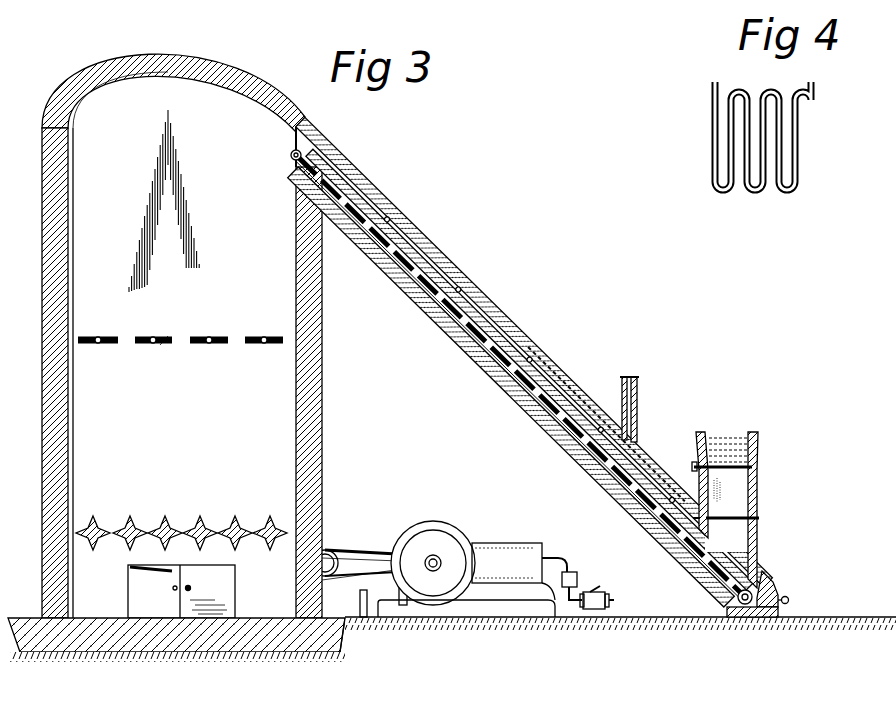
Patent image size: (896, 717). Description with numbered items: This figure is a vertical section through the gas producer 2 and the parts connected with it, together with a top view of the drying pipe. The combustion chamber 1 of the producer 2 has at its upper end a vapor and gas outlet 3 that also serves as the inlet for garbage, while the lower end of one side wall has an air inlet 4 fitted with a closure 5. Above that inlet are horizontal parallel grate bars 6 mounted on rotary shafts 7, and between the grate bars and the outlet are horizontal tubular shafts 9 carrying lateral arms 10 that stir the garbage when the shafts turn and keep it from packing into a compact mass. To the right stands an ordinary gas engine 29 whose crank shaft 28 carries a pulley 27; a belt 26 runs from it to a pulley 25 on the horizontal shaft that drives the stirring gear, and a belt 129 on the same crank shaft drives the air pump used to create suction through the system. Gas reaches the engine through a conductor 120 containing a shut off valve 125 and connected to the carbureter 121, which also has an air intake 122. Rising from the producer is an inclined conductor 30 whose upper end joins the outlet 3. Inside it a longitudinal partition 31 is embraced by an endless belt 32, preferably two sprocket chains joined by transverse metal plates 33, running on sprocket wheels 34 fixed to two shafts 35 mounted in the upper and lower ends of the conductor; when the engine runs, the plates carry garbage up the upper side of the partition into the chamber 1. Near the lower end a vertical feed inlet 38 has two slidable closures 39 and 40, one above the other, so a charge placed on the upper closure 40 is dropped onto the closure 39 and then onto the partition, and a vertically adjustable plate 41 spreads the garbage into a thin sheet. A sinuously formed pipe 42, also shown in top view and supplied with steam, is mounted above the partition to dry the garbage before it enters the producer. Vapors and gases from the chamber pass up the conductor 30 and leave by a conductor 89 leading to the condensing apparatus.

In FIG. 3, the combustion chamber 1 is at (203, 208).
In FIG. 3, the gas producer 2 is at (42, 196).
In FIG. 3, the vapor and gas outlet 3 is at (296, 136).
In FIG. 3, the air inlet 4 is at (128, 591).
In FIG. 3, the closure 5 is at (188, 601).
In FIG. 3, the grate bars 6 is at (166, 520).
In FIG. 3, the rotary shafts 7 is at (268, 526).
In FIG. 3, the tubular shafts 9 is at (104, 337).
In FIG. 3, the lateral arms 10 is at (160, 345).
In FIG. 3, the pulley 25 is at (330, 548).
In FIG. 3, the belt 26 is at (366, 548).
In FIG. 3, the pulley 27 is at (434, 554).
In FIG. 3, the crank shaft 28 is at (442, 562).
In FIG. 3, the gas engine 29 is at (495, 543).
In FIG. 3, the inclined conductor 30 is at (447, 266).
In FIG. 3, the partition 31 is at (453, 303).
In FIG. 3, the endless belt 32 is at (487, 328).
In FIG. 3, the transverse metal plates 33 is at (391, 238).
In FIG. 3, the sprocket wheels 34 is at (292, 158).
In FIG. 3, the shafts 35 is at (316, 147).
In FIG. 3, the vertical feed inlet 38 is at (732, 538).
In FIG. 3, the slidable closure 39 is at (757, 516).
In FIG. 3, the slidable closure 40 is at (756, 470).
In FIG. 3, the vertical plate 41 is at (728, 473).
In FIG. 3, the sinuously formed pipe 42 is at (562, 386).
In FIG. 4, the sinuously formed pipe 42 is at (818, 148).
In FIG. 3, the conductor 89 is at (637, 412).
In FIG. 3, the conductor 120 is at (608, 598).
In FIG. 3, the carbureter 121 is at (576, 572).
In FIG. 3, the air intake 122 is at (569, 607).
In FIG. 3, the shut off valve 125 is at (598, 590).
In FIG. 3, the belt 129 is at (348, 626).